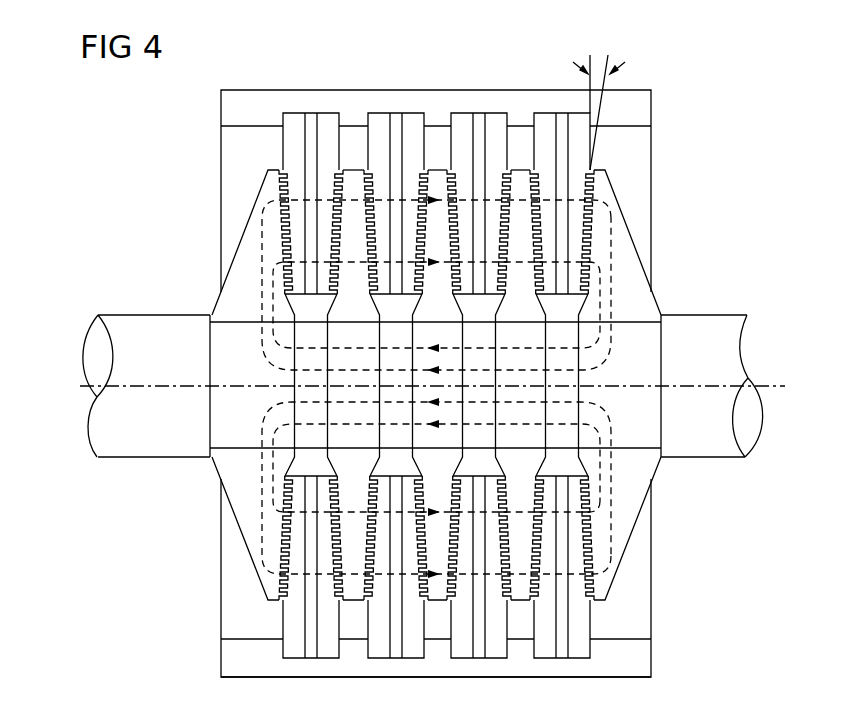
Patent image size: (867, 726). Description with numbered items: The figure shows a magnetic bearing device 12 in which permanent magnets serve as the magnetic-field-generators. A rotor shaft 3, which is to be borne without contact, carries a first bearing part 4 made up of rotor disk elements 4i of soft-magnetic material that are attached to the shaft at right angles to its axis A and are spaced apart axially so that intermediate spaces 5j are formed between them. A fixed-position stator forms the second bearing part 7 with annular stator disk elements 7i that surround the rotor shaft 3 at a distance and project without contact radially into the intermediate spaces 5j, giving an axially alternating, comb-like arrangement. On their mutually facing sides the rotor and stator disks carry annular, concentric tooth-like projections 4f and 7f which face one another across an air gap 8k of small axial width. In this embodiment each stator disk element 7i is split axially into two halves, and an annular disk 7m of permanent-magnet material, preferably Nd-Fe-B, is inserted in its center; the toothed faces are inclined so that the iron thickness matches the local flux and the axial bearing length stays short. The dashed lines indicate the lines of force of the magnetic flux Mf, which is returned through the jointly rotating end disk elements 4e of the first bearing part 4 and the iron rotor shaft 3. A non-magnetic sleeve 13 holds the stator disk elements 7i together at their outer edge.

The rotor shaft 3 is at (757, 432).
The first bearing part 4 is at (228, 541).
The end disk elements 4e is at (626, 527).
The tooth-like projections 4f is at (531, 208).
The rotor disk elements 4i is at (355, 180).
The intermediate spaces 5j is at (520, 137).
The second bearing part 7 is at (274, 146).
The tooth-like projections 7f is at (536, 170).
The stator disk elements 7i is at (288, 613).
The annular disk of permanent-magnet material 7m is at (312, 124).
The air gap 8k is at (425, 175).
The magnetic bearing device 12 is at (197, 285).
The non-magnetic sleeve 13 is at (644, 655).
The axis A is at (788, 386).
The magnetic flux Mf is at (598, 353).